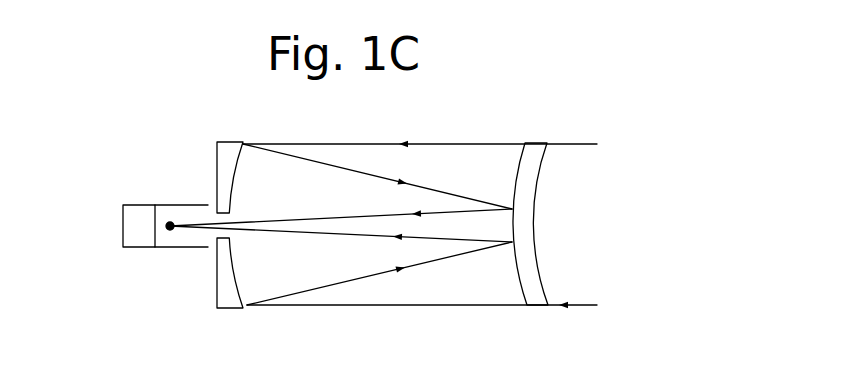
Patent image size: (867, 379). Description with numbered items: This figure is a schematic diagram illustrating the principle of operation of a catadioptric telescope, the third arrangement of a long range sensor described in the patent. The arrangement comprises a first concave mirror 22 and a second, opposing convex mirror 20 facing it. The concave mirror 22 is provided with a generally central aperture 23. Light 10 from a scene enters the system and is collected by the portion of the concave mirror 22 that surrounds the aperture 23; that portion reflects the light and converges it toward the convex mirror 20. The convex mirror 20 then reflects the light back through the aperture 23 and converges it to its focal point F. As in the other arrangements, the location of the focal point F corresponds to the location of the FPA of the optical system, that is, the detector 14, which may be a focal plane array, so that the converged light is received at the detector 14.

The light 10 is at (579, 144).
The detector 14 is at (132, 226).
The convex mirror 20 is at (530, 262).
The concave mirror 22 is at (230, 297).
The aperture 23 is at (225, 237).
The focal point F is at (167, 229).
The focal plane array FPA is at (169, 205).